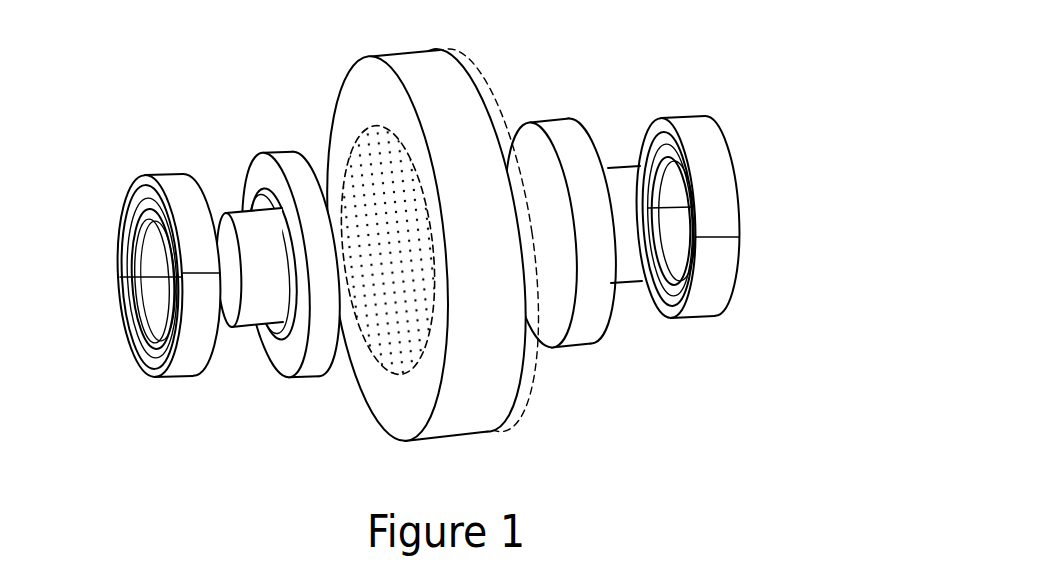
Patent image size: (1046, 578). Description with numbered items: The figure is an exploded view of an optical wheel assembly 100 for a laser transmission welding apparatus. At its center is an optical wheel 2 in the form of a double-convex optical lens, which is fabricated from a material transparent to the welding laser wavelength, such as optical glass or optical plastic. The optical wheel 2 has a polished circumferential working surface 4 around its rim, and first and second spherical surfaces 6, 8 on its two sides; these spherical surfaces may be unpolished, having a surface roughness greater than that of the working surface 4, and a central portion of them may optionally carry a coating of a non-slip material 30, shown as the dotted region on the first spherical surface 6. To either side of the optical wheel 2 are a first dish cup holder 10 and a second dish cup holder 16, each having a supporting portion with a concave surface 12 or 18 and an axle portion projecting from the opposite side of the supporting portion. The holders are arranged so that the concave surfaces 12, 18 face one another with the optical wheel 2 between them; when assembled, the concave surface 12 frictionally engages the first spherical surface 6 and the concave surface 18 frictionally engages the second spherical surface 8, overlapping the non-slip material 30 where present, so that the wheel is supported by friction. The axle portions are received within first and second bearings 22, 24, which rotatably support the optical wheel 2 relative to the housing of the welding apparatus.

The optical wheel assembly 100 is at (461, 269).
The optical wheel 2 is at (420, 269).
The circumferential working surface 4 is at (428, 78).
The first spherical surface 6 is at (407, 417).
The second spherical surface 8 is at (530, 263).
The first dish cup holder 10 is at (295, 158).
The concave surface 12 is at (347, 262).
The second dish cup holder 16 is at (600, 128).
The concave surface 18 is at (543, 162).
The first bearing 22 is at (160, 178).
The second bearing 24 is at (713, 168).
The non-slip material 30 is at (413, 335).